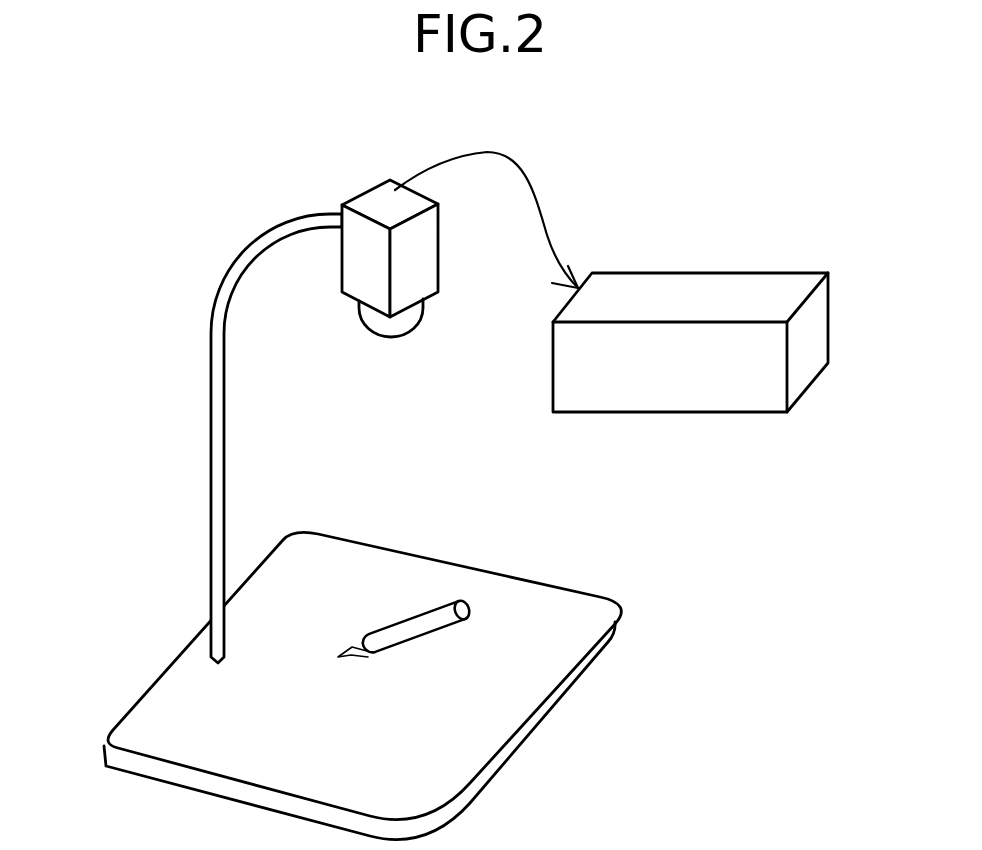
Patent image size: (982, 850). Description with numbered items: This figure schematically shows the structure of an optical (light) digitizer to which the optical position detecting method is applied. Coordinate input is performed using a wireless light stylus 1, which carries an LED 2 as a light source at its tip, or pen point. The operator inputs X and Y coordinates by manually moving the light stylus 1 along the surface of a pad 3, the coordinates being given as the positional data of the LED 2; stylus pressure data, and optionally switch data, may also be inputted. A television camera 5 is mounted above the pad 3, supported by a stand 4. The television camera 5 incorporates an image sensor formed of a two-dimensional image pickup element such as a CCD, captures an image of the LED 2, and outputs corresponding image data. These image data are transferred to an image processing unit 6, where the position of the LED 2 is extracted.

The light stylus 1 is at (409, 637).
The LED 2 is at (346, 645).
The pad 3 is at (483, 769).
The stand 4 is at (215, 403).
The television camera 5 is at (367, 193).
The image processing unit 6 is at (670, 272).